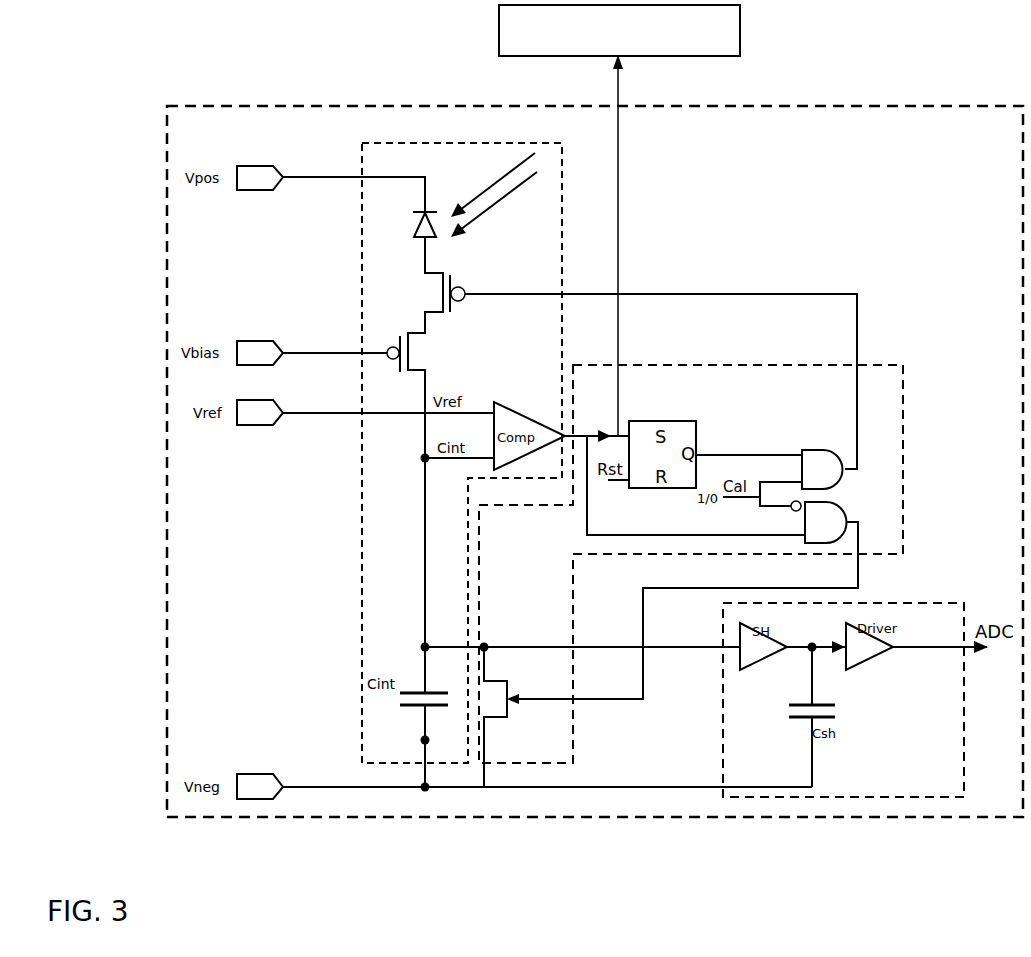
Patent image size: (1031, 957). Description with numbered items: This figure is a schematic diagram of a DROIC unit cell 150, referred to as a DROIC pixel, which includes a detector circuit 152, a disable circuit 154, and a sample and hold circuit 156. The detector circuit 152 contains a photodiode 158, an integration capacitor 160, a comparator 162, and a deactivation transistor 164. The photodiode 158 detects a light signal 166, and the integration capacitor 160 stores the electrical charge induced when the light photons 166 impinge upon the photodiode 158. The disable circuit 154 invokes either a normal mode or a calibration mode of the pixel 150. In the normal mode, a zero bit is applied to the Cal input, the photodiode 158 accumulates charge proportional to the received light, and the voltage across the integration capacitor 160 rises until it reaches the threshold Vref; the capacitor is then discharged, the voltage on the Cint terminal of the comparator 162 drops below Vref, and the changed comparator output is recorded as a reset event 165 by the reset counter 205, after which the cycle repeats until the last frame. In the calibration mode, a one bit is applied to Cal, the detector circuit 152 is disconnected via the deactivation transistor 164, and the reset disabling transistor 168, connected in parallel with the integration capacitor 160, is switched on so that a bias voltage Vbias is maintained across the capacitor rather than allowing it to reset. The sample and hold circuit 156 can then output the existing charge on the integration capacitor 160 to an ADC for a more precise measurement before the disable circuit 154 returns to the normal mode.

The DROIC unit cell 150 is at (160, 152).
The detector circuit 152 is at (355, 256).
The disable circuit 154 is at (885, 352).
The sample and hold (SH) circuit 156 is at (912, 590).
The photodiode 158 is at (423, 238).
The integration capacitor 160 is at (410, 700).
The comparator 162 is at (515, 407).
The deactivation transistor 164 is at (442, 310).
The reset event 165 is at (617, 268).
The light signal 166 is at (502, 193).
The reset disabling transistor 168 is at (507, 715).
The reset counter 205 is at (499, 30).